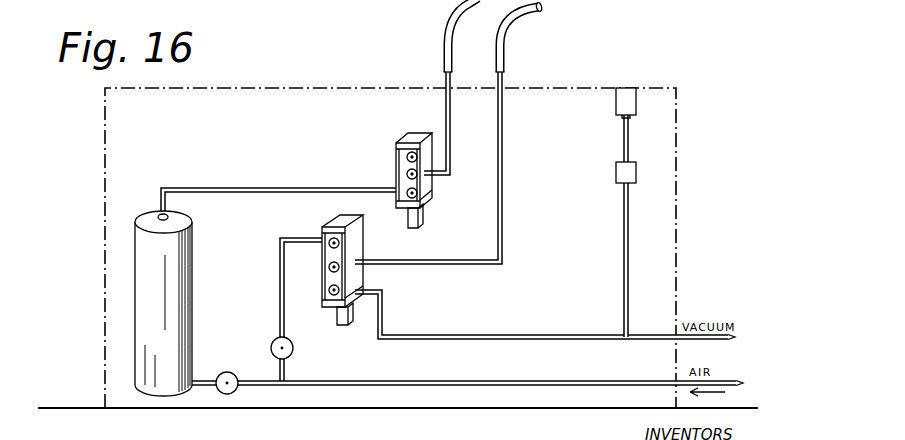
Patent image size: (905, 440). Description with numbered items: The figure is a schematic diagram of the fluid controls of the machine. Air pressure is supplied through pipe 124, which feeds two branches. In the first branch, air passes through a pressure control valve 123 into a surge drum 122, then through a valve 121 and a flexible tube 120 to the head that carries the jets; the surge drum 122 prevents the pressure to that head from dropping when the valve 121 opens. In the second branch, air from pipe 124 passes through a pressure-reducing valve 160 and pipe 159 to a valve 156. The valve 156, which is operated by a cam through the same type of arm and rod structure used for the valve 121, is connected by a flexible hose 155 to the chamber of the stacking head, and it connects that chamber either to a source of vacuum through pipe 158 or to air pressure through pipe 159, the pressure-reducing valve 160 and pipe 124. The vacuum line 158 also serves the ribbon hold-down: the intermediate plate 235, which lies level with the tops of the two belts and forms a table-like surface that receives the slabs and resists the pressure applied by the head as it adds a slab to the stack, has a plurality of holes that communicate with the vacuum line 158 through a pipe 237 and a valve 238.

The flexible tube 120 is at (447, 20).
The flexible hose 155 is at (541, 31).
The intermediate plate 235 is at (627, 88).
The pipe 237 is at (620, 140).
The valve 238 is at (615, 178).
The valve 121 is at (395, 150).
The valve 156 is at (352, 246).
The pipe 159 is at (281, 253).
The surge drum 122 is at (158, 295).
The pressure control valve 123 is at (228, 372).
The pressure-reducing valve 160 is at (292, 353).
The pipe 158 is at (485, 335).
The pipe 124 is at (505, 383).